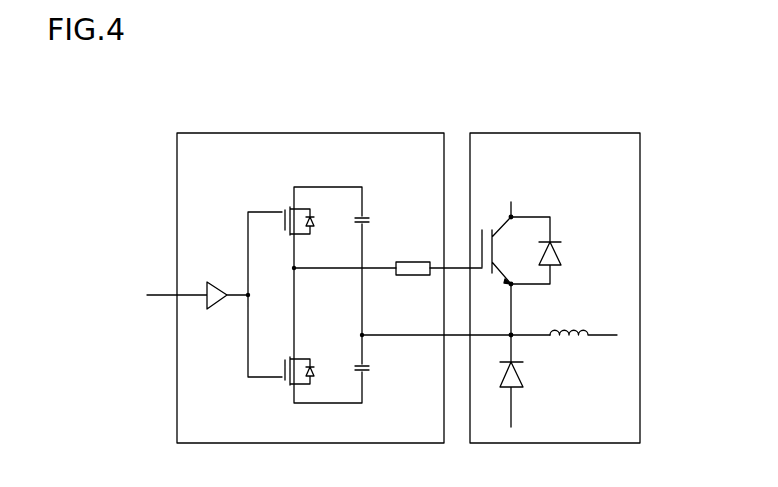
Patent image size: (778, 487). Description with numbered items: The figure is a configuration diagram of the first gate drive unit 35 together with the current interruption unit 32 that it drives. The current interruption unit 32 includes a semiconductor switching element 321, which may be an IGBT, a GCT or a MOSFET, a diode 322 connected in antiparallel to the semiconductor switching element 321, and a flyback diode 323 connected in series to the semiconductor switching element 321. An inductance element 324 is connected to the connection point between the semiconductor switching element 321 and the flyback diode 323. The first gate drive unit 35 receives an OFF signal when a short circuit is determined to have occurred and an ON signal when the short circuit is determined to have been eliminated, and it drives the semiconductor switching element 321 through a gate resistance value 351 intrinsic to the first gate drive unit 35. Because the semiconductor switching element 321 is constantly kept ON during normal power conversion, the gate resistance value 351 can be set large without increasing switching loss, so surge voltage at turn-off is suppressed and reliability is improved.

The first gate drive unit 35 is at (327, 132).
The gate resistance value 351 is at (410, 261).
The current interruption unit 32 is at (567, 132).
The semiconductor switching element 321 is at (495, 223).
The diode 322 is at (563, 235).
The flyback diode 323 is at (525, 377).
The inductance element 324 is at (578, 324).